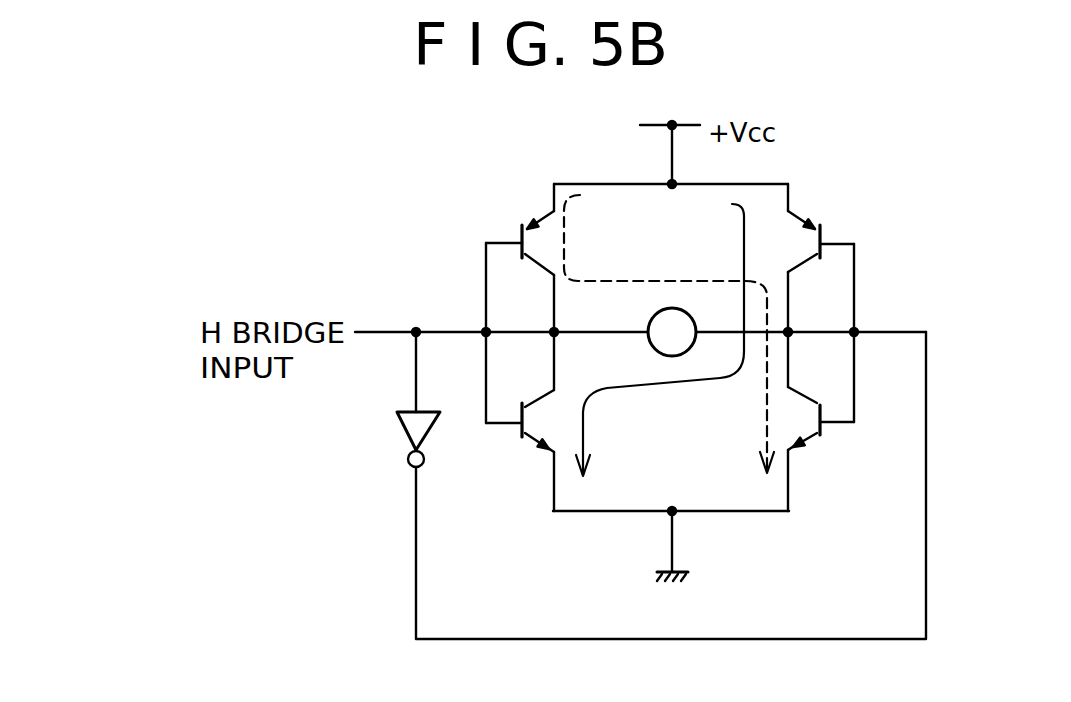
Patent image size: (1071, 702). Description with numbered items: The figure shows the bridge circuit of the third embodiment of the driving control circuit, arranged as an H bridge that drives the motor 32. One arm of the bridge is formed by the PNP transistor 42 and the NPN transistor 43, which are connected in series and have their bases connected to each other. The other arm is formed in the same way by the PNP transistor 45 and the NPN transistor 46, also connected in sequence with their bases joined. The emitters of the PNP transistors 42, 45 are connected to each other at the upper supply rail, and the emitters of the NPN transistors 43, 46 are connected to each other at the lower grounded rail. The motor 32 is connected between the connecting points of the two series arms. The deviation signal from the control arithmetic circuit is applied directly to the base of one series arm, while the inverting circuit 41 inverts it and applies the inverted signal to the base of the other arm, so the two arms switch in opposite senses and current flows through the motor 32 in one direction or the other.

The motor 32 is at (655, 316).
The inverting circuit 41 is at (402, 428).
The PNP transistor 42 is at (537, 222).
The NPN transistor 43 is at (532, 440).
The PNP transistor 45 is at (804, 218).
The NPN transistor 46 is at (810, 440).